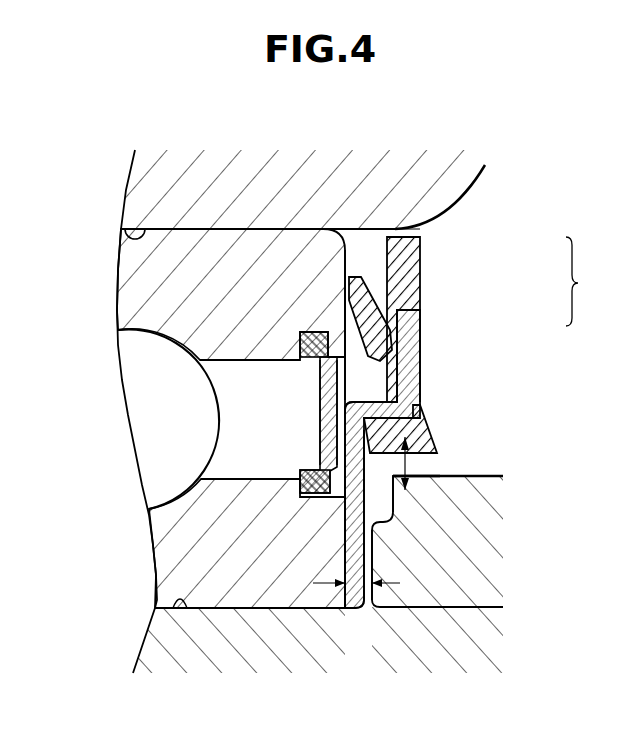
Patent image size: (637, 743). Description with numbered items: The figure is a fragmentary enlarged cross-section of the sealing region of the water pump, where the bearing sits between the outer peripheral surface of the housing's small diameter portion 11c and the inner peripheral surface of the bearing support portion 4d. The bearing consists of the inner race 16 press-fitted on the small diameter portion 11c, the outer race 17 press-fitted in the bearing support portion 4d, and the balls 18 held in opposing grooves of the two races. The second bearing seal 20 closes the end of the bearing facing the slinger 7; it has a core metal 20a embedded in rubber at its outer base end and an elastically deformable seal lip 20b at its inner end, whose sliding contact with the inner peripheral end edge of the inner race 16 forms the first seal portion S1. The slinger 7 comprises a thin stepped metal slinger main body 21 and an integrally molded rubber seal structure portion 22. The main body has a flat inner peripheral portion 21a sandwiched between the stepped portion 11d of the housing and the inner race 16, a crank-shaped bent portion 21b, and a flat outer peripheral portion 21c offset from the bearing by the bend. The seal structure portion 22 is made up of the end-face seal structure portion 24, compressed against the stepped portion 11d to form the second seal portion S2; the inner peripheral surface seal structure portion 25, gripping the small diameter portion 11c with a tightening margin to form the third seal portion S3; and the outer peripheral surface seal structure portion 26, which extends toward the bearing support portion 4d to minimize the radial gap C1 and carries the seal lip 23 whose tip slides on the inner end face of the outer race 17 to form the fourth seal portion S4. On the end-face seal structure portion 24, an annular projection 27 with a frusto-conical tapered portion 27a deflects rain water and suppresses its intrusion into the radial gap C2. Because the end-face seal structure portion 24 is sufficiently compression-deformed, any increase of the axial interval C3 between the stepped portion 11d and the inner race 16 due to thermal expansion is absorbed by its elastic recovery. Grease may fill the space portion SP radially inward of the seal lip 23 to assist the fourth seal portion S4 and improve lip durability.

The bearing support portion 4d is at (118, 242).
The slinger 7 is at (581, 281).
The small diameter portion 11c is at (186, 612).
The stepped portion 11d is at (372, 565).
The inner race 16 is at (233, 608).
The outer race 17 is at (170, 240).
The balls 18 is at (231, 350).
The second bearing seal 20 is at (201, 331).
The core metal 20a is at (322, 408).
The seal lip 20b is at (345, 517).
The slinger main body 21 is at (303, 513).
The inner peripheral portion 21a is at (345, 547).
The bent portion 21b is at (350, 395).
The outer peripheral portion 21c is at (421, 345).
The seal structure portion 22 is at (474, 294).
The seal lip 23 is at (375, 283).
The end-face seal structure portion 24 is at (398, 505).
The inner peripheral surface seal structure portion 25 is at (355, 610).
The outer peripheral surface seal structure portion 26 is at (420, 256).
The annular projection 27 is at (479, 429).
The tapered portion 27a is at (432, 452).
The gap in the radial direction C1 is at (393, 220).
The gap in the radial direction C2 is at (400, 474).
The interval in the axial direction C3 is at (372, 604).
The first seal portion S1 is at (410, 432).
The second seal portion S2 is at (374, 510).
The third seal portion S3 is at (310, 608).
The fourth seal portion S4 is at (350, 277).
The space portion SP is at (370, 372).